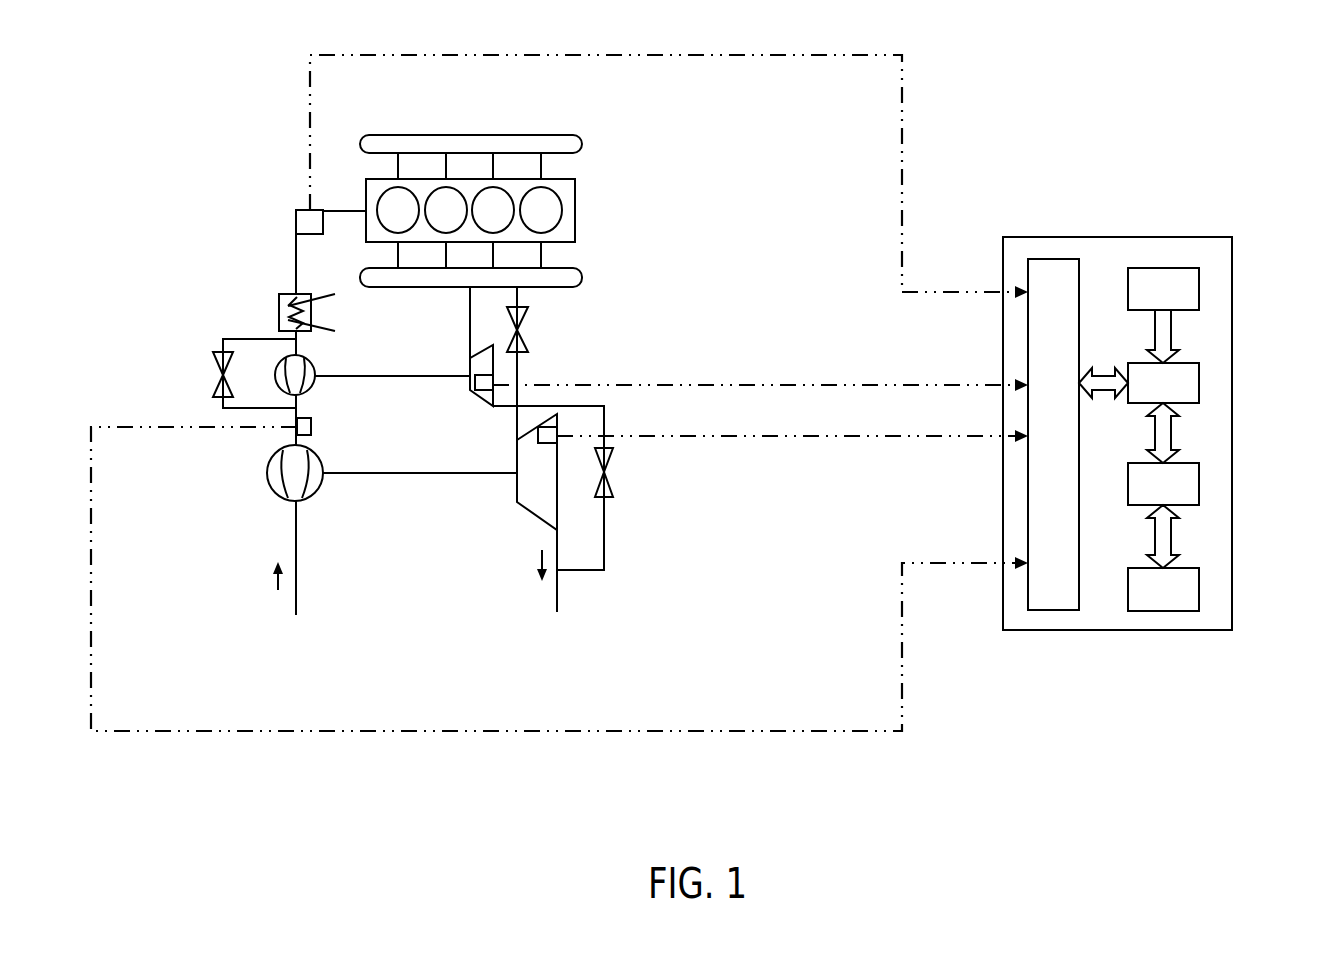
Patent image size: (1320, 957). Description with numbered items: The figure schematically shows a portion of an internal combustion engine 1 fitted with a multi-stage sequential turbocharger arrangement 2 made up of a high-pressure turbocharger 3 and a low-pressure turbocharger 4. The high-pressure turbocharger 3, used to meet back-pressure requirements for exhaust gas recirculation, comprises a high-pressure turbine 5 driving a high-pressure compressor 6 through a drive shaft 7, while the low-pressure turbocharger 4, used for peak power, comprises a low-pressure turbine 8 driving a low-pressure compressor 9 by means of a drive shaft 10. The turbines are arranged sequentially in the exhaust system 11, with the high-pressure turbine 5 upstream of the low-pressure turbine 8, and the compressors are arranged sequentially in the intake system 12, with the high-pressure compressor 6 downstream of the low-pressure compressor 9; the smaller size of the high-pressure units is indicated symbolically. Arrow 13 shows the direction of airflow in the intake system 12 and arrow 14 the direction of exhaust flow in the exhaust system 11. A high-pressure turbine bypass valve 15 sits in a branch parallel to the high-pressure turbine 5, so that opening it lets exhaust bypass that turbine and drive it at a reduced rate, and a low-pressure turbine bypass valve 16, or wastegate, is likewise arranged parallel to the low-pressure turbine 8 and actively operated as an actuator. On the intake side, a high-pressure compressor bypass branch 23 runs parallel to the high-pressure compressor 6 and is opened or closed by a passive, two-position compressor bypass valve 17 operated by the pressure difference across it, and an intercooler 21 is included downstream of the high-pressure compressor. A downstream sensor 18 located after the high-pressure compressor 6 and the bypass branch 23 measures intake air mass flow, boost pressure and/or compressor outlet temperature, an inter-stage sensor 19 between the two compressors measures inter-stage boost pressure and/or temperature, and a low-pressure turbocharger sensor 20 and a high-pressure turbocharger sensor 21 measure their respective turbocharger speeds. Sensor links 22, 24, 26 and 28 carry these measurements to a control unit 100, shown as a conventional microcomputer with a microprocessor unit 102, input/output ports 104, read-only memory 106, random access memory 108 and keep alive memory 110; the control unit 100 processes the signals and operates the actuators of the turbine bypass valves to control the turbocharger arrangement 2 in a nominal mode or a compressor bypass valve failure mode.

The internal combustion engine 1 is at (637, 136).
The multi-stage sequential turbocharger arrangement 2 is at (631, 372).
The high-pressure turbocharger 3 is at (198, 321).
The low-pressure turbocharger 4 is at (210, 460).
The high-pressure turbine 5 is at (472, 366).
The high-pressure compressor 6 is at (315, 364).
The drive shaft 7 is at (400, 380).
The low-pressure turbine 8 is at (530, 493).
The low-pressure compressor 9 is at (301, 494).
The drive shaft 10 is at (455, 476).
The exhaust system 11 is at (590, 620).
The intake system 12 is at (250, 645).
The airflow direction arrow 13 is at (272, 588).
The exhaust flow direction arrow 14 is at (538, 563).
The high-pressure turbine bypass valve 15 is at (523, 321).
The low-pressure turbine bypass valve 16 is at (610, 496).
The compressor bypass valve 17 is at (213, 363).
The downstream sensor 18 is at (306, 215).
The inter-stage sensor 19 is at (311, 432).
The low-pressure turbocharger sensor 20 is at (557, 427).
The high-pressure turbocharger sensor 21 is at (288, 302).
The sensor link 22 is at (767, 55).
The high-pressure compressor bypass branch 23 is at (265, 338).
The sensor link 24 is at (742, 731).
The sensor link 26 is at (800, 437).
The sensor link 28 is at (797, 385).
The control unit 100 is at (1232, 237).
The microprocessor unit 102 is at (1199, 380).
The input/output ports 104 is at (1079, 268).
The read-only memory 106 is at (1199, 288).
The random access memory 108 is at (1199, 485).
The keep alive memory 110 is at (1199, 585).